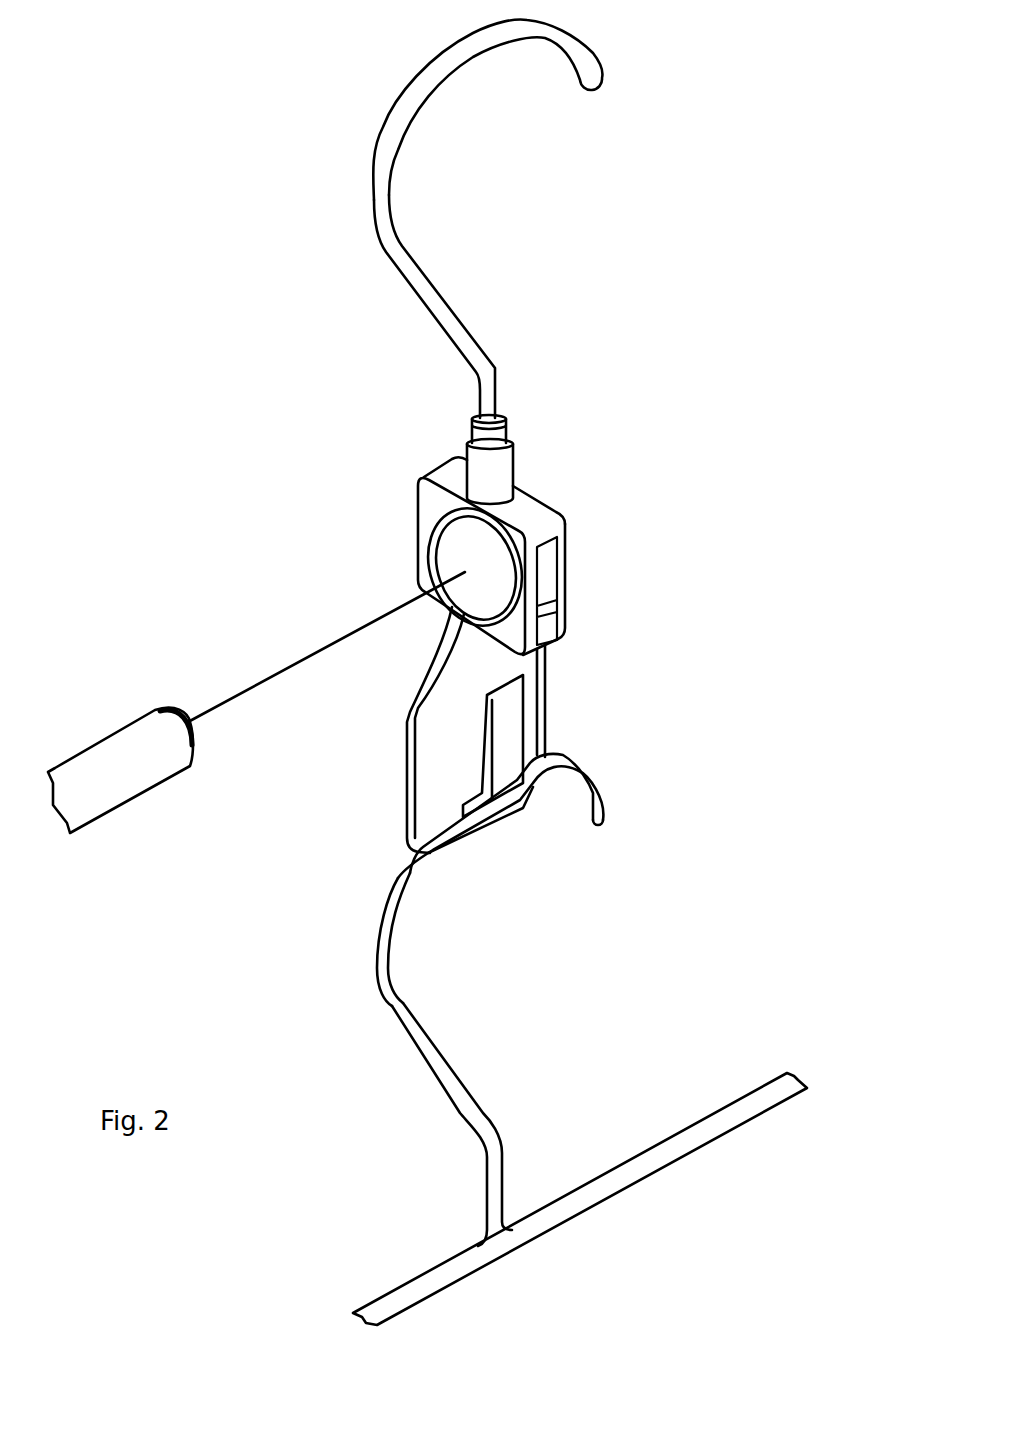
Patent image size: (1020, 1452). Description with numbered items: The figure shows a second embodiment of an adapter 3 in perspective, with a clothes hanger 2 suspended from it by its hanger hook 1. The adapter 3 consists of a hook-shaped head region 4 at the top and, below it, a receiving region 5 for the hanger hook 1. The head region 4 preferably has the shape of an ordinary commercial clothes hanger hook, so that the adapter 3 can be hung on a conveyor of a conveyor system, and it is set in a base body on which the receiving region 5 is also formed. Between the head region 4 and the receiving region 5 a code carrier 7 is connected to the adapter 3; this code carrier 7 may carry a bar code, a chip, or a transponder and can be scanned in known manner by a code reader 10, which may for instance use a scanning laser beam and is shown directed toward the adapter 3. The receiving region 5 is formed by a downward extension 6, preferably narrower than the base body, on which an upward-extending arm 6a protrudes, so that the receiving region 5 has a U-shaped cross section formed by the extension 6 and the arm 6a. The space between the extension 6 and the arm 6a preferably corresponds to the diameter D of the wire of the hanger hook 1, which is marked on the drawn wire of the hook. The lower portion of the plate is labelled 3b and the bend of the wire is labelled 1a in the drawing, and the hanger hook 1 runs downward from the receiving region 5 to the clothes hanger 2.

The hanger hook 1 is at (383, 963).
The bend of hanger wire 1a is at (352, 893).
The clothes hanger 2 is at (637, 1168).
The adapter 3 is at (582, 486).
The lower plate portion of holder 3b is at (576, 686).
The head region 4 is at (357, 2).
The receiving region 5 is at (670, 800).
The downward extension 6 is at (407, 773).
The upward-extending arm 6a is at (512, 745).
The code carrier 7 is at (548, 582).
The code reader 10 is at (108, 790).
The diameter of the wire of the hanger hook D is at (419, 1062).